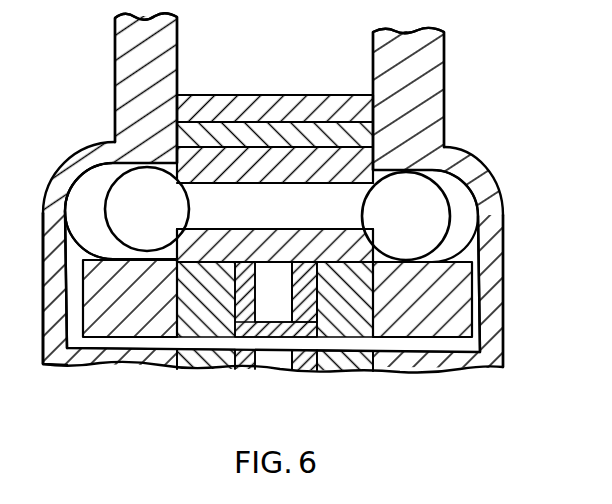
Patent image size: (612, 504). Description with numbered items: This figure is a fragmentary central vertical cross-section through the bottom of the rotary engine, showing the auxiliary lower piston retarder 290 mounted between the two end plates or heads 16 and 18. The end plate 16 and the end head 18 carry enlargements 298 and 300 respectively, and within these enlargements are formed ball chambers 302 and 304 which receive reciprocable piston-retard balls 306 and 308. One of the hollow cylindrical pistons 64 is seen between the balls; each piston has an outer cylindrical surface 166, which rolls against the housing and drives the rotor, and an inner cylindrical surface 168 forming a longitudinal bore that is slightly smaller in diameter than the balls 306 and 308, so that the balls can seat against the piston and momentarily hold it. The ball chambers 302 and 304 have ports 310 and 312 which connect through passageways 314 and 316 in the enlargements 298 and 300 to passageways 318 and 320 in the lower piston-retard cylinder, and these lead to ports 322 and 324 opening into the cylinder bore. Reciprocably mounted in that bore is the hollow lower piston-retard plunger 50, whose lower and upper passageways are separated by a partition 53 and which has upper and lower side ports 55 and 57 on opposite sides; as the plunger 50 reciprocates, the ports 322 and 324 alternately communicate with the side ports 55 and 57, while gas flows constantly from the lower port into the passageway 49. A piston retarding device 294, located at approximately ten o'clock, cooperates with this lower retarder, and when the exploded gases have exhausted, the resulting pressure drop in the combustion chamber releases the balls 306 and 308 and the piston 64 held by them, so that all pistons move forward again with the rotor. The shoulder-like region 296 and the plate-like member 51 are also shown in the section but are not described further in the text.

The end plate 16 is at (112, 63).
The end head 18 is at (448, 54).
The cylindrical piston 64 is at (222, 152).
The piston retarding device 294 is at (113, 140).
The auxiliary lower piston retarder 290 is at (172, 157).
The shoulder 296 is at (447, 145).
The ball chamber 302 is at (77, 188).
The port 310 is at (77, 230).
The ball chamber 304 is at (458, 183).
The port 312 is at (475, 228).
The piston-retard ball 306 is at (180, 210).
The piston-retard ball 308 is at (364, 216).
The inner cylindrical surface 168 is at (309, 189).
The outer cylindrical surface 166 is at (312, 229).
The clamp plate 51 is at (268, 260).
The passageway 314 is at (72, 262).
The passageway 316 is at (480, 315).
The enlargement 298 is at (51, 306).
The enlargement 300 is at (488, 258).
The lower piston-retard plunger 50 is at (308, 307).
The partition 53 is at (242, 322).
The upper port 55 is at (300, 313).
The lower port 57 is at (297, 345).
The passageway 49 is at (282, 372).
The passageway 318 is at (143, 351).
The port 322 is at (227, 357).
The port 324 is at (323, 352).
The passageway 320 is at (393, 352).